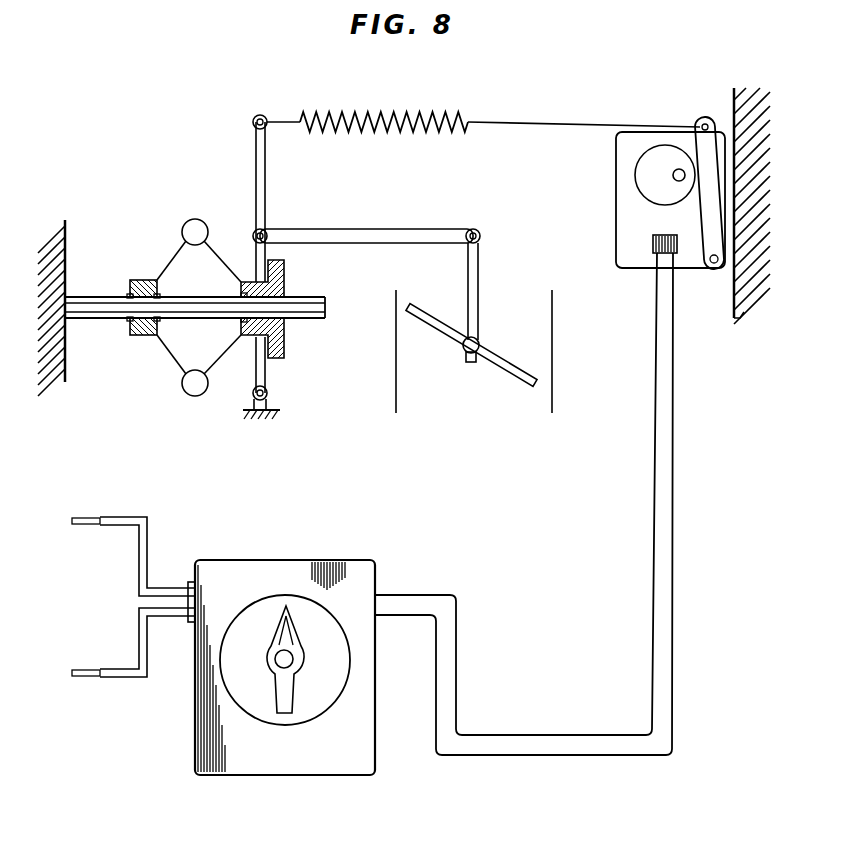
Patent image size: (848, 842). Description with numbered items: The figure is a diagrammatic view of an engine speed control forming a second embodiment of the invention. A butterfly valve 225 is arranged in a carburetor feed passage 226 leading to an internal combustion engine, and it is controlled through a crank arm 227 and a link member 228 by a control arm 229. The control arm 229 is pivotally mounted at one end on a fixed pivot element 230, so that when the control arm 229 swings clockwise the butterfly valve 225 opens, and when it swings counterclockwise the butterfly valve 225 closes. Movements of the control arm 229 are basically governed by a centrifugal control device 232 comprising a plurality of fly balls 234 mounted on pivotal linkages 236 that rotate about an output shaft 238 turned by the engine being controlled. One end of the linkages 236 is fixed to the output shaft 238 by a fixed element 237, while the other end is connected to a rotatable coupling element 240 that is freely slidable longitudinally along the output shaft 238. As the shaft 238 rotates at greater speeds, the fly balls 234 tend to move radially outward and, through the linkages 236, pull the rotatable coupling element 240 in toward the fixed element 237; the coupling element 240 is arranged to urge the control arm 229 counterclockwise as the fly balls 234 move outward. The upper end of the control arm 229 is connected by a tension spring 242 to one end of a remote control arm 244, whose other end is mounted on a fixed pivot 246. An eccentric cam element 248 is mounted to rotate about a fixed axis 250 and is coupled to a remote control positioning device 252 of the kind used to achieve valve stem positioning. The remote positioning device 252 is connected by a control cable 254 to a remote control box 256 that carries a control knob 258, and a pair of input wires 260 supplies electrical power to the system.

The butterfly valve 225 is at (520, 374).
The carburetor feed passage 226 is at (407, 357).
The crank arm 227 is at (536, 272).
The link member 228 is at (409, 232).
The control arm 229 is at (264, 162).
The fixed pivot element 230 is at (266, 405).
The centrifugal control device 232 is at (137, 212).
The fly balls 234 is at (224, 200).
The pivotal linkages 236 is at (164, 268).
The fixed element 237 is at (134, 283).
The output shaft 238 is at (90, 303).
The rotatable coupling element 240 is at (272, 281).
The tension spring 242 is at (460, 82).
The remote control arm 244 is at (723, 127).
The fixed pivot 246 is at (700, 264).
The eccentric cam element 248 is at (642, 170).
The fixed axis 250 is at (674, 178).
The remote control positioning device 252 is at (625, 270).
The control cable 254 is at (560, 733).
The remote control box 256 is at (297, 776).
The control knob 258 is at (282, 690).
The input wires 260 is at (77, 523).